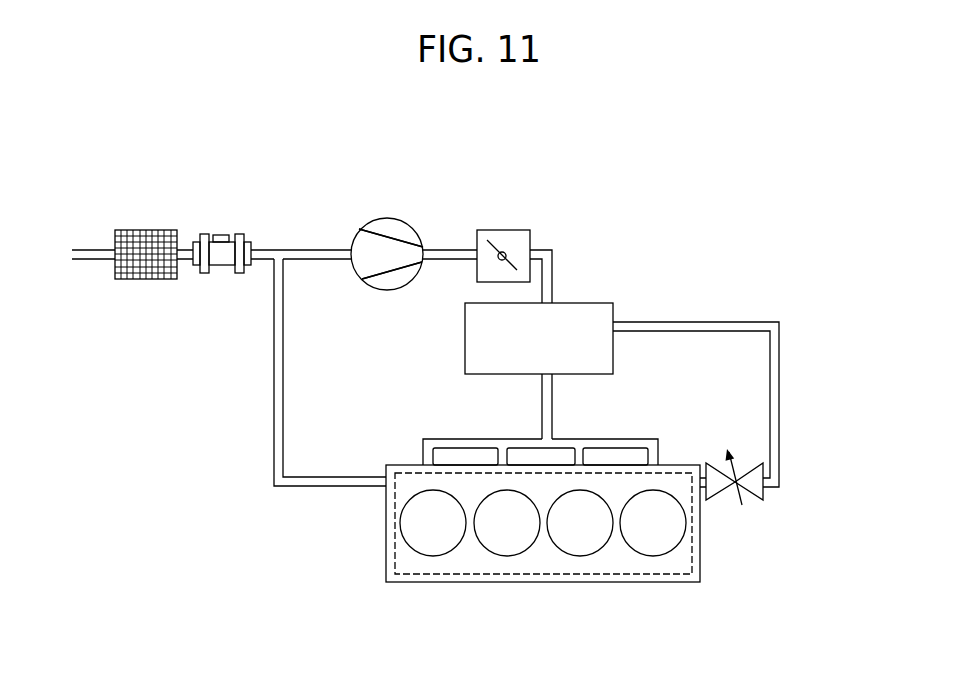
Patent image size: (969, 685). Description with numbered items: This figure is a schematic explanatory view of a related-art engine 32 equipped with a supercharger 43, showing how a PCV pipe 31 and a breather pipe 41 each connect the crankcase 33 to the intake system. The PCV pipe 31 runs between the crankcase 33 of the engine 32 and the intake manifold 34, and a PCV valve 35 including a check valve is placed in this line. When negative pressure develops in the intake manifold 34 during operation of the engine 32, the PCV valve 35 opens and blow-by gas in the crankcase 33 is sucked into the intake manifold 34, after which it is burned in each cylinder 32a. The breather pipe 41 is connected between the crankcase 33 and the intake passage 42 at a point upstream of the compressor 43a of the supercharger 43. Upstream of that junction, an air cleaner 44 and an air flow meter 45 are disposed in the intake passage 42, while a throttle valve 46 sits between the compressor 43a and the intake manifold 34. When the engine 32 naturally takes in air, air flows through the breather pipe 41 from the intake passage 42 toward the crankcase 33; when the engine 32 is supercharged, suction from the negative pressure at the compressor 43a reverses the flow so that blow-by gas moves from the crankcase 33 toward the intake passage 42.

The PCV pipe 31 is at (780, 395).
The engine 32 is at (527, 553).
The cylinder 32a is at (420, 556).
The crankcase 33 is at (670, 582).
The intake manifold 34 is at (600, 303).
The PCV valve 35 is at (752, 493).
The breather pipe 41 is at (273, 379).
The intake passage 42 is at (307, 247).
The supercharger 43 is at (397, 211).
The compressor 43a is at (391, 254).
The air cleaner 44 is at (141, 230).
The air flow meter 45 is at (222, 234).
The throttle valve 46 is at (506, 255).